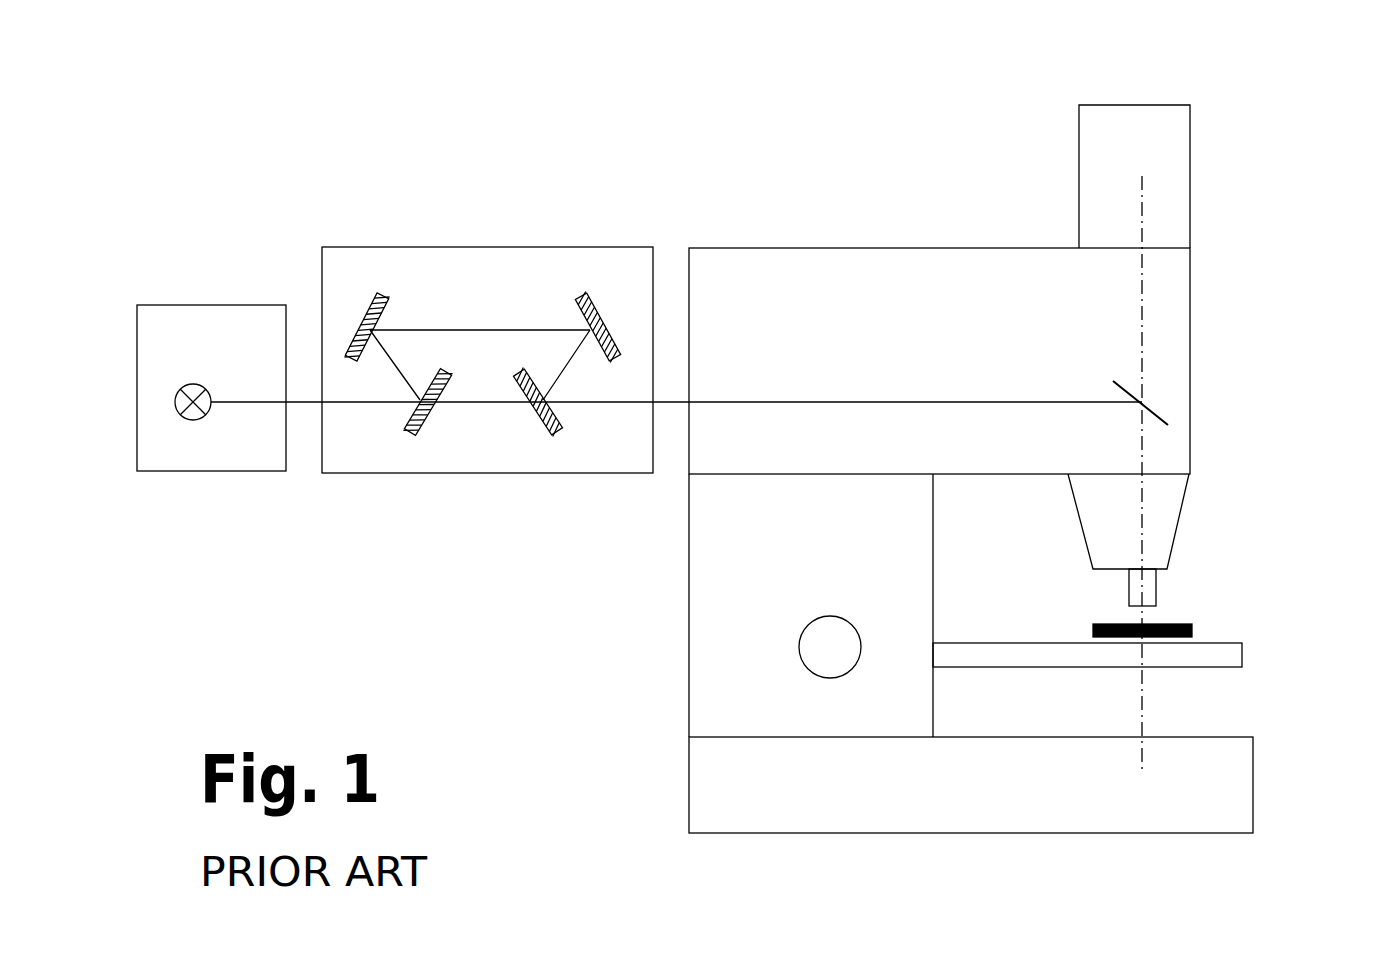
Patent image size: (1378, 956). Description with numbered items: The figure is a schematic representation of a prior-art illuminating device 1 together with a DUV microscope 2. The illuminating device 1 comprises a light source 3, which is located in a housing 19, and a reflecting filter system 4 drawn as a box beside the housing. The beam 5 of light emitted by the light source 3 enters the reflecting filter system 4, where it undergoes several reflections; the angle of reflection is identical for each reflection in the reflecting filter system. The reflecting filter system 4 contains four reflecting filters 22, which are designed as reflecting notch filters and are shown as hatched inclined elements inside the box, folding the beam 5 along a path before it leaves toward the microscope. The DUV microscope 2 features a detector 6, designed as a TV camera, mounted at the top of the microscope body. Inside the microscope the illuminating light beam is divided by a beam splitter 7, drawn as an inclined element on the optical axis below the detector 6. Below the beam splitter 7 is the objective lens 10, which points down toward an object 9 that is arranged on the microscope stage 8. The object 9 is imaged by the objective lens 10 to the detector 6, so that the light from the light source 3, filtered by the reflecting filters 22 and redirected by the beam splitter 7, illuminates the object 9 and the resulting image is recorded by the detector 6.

The illuminating device 1 is at (292, 214).
The DUV microscope 2 is at (883, 213).
The light source 3 is at (194, 420).
The reflecting filter system 4 is at (507, 503).
The beam 5 is at (502, 325).
The detector 6 is at (1111, 227).
The beam splitter 7 is at (1165, 420).
The microscope stage 8 is at (1087, 667).
The object 9 is at (1093, 632).
The objective lens 10 is at (1156, 588).
The housing 19 is at (181, 332).
The reflecting filters 22 is at (382, 293).